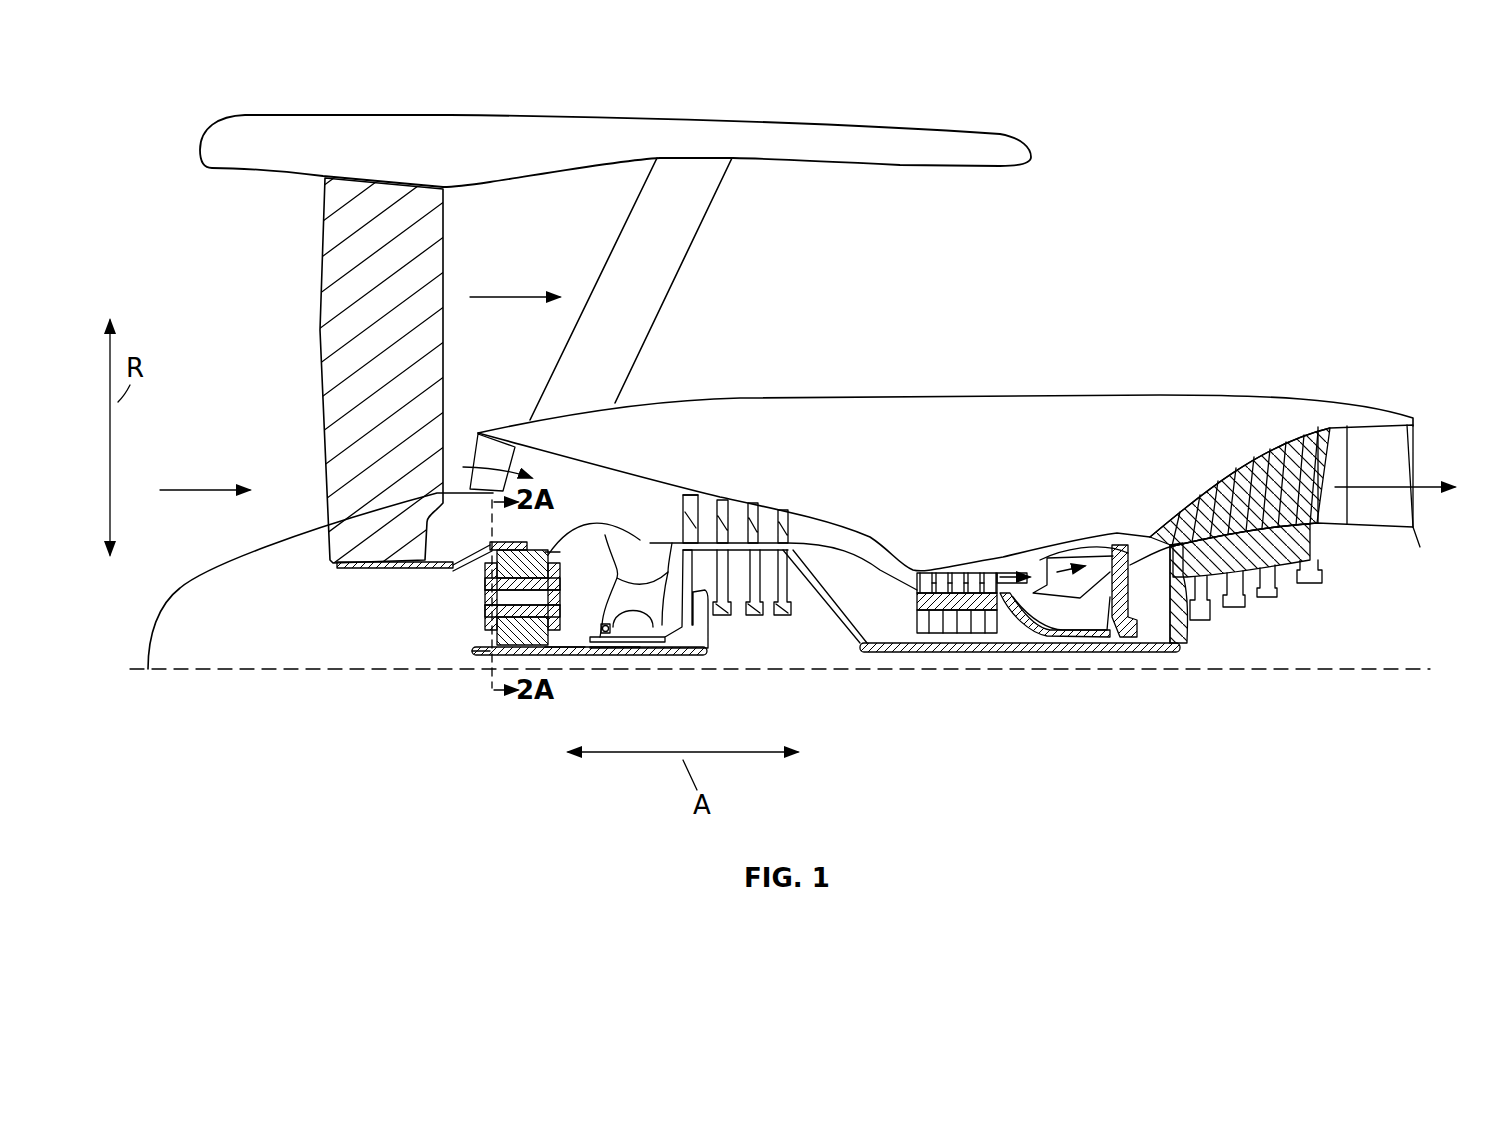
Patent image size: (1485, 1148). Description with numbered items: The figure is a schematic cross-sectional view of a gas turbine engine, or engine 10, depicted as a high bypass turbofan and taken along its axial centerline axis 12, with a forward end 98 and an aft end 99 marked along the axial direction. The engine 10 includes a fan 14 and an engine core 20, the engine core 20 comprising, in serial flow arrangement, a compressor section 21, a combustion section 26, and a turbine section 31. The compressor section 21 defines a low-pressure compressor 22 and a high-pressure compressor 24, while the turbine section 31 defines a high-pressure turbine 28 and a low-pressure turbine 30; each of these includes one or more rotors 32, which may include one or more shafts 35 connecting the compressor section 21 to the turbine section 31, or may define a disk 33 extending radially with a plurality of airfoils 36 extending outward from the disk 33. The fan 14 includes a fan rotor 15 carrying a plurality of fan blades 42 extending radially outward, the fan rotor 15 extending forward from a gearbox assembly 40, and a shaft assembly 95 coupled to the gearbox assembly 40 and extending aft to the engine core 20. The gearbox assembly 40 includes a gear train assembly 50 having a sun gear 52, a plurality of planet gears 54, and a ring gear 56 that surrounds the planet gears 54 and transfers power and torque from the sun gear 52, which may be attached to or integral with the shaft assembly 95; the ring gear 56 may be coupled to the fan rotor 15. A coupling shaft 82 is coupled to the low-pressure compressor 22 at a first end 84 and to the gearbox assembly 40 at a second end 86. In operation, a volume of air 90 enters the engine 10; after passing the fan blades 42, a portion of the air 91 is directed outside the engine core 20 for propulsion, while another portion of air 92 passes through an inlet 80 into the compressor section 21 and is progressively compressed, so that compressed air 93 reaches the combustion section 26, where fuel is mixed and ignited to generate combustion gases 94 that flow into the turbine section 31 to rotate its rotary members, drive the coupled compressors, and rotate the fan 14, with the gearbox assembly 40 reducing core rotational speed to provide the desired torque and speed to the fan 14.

The engine 10 is at (1187, 181).
The axis 12 is at (265, 672).
The fan 14 is at (318, 430).
The fan rotor 15 is at (364, 569).
The engine core 20 is at (902, 418).
The compressor section 21 is at (926, 486).
The low-pressure compressor 22 is at (767, 492).
The high-pressure compressor 24 is at (960, 570).
The combustion section 26 is at (1092, 514).
The high-pressure turbine 28 is at (1113, 558).
The low-pressure turbine 30 is at (1222, 490).
The turbine section 31 is at (1253, 456).
The rotor 32 is at (786, 617).
The disk 33 is at (728, 596).
The shaft 35 is at (917, 655).
The airfoils 36 is at (724, 496).
The gearbox assembly 40 is at (607, 537).
The fan blades 42 is at (332, 287).
The gear train assembly 50 is at (484, 580).
The sun gear 52 is at (495, 633).
The planet gears 54 is at (543, 552).
The ring gear 56 is at (497, 547).
The inlet 80 is at (468, 452).
The coupling shaft 82 is at (592, 658).
The first end 84 is at (640, 655).
The second end 86 is at (483, 656).
The volume of air 90 is at (205, 489).
The portion of the air 91 is at (516, 296).
The portion of air 92 is at (520, 466).
The compressed air 93 is at (1010, 575).
The combustion gases 94 is at (1078, 565).
The shaft assembly 95 is at (565, 658).
The forward end 98 is at (97, 662).
The aft end 99 is at (1438, 610).